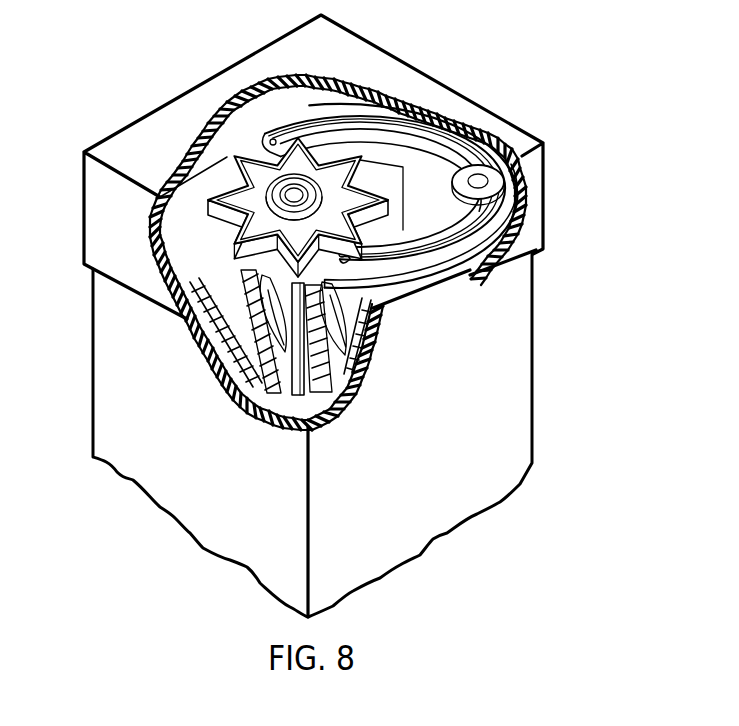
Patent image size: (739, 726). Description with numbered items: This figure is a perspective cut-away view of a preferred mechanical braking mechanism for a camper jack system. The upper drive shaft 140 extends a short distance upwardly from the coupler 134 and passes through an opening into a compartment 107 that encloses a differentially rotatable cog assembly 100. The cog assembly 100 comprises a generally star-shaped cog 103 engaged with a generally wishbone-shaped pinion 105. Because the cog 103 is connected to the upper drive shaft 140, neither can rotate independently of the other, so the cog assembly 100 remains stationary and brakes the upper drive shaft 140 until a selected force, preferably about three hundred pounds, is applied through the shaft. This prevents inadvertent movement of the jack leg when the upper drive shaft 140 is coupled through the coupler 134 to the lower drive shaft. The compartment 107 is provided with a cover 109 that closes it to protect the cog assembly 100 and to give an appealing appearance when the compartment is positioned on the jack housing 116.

The differentially rotatable cog assembly 100 is at (250, 128).
The star-shaped cog 103 is at (230, 157).
The wishbone-shaped pinion 105 is at (420, 137).
The compartment 107 is at (200, 237).
The cover 109 is at (386, 62).
The jack housing 116 is at (480, 316).
The coupler 134 is at (335, 362).
The upper drive shaft 140 is at (287, 338).